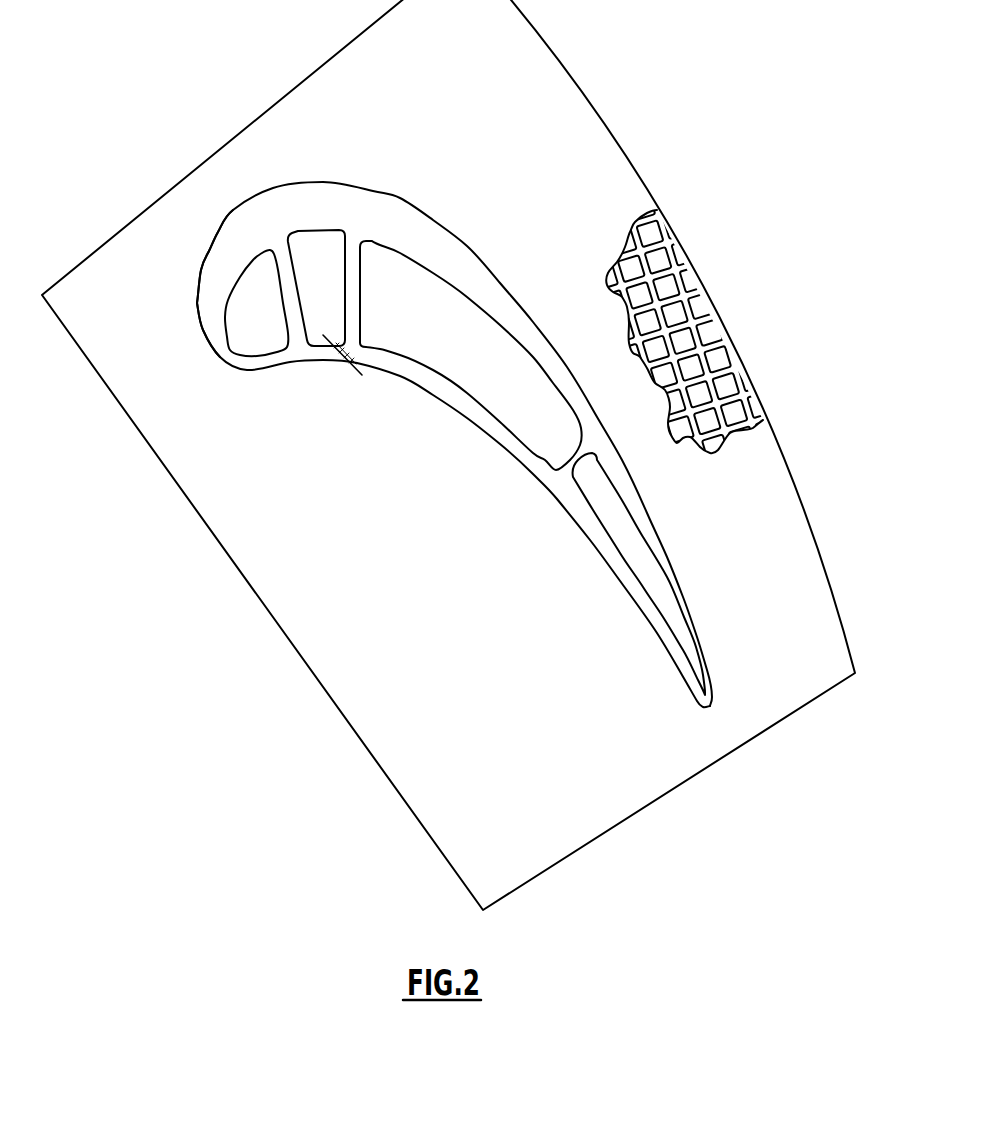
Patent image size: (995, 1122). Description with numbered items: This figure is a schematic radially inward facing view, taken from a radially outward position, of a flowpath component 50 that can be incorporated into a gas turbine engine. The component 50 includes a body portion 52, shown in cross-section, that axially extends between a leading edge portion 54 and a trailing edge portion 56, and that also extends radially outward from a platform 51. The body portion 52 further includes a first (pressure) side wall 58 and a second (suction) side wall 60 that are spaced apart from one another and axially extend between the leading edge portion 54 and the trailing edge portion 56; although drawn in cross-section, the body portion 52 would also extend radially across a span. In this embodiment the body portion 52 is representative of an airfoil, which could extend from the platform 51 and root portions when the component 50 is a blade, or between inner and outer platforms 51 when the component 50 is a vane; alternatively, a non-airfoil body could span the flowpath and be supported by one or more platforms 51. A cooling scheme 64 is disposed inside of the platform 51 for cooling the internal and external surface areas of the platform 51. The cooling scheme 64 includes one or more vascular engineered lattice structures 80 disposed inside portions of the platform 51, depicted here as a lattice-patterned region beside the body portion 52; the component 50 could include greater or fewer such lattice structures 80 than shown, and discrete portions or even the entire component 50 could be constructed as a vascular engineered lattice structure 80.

The component 50 is at (659, 67).
The platform 51 is at (692, 258).
The body portion 52 is at (420, 461).
The leading edge portion 54 is at (196, 311).
The trailing edge portion 56 is at (707, 710).
The first (pressure) side wall 58 is at (402, 376).
The second (suction) side wall 60 is at (412, 206).
The cooling scheme 64 is at (703, 317).
The vascular engineered lattice structure 80 is at (674, 314).